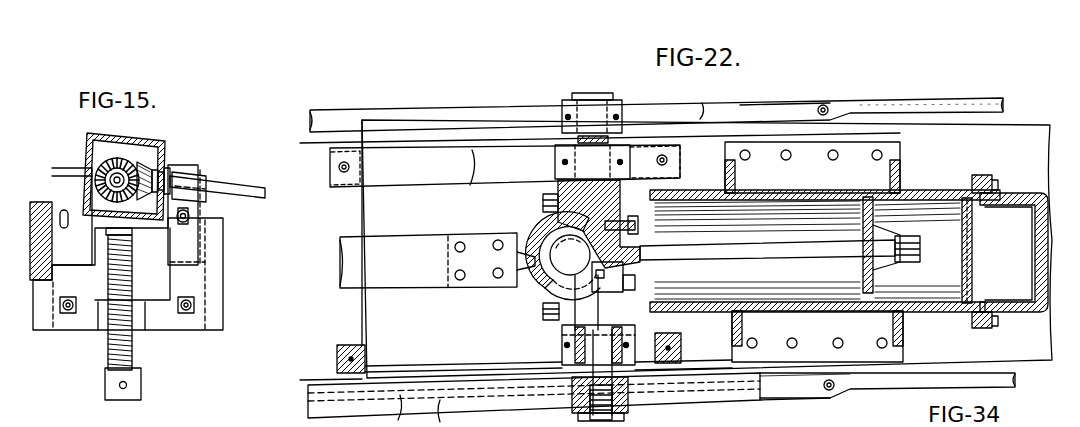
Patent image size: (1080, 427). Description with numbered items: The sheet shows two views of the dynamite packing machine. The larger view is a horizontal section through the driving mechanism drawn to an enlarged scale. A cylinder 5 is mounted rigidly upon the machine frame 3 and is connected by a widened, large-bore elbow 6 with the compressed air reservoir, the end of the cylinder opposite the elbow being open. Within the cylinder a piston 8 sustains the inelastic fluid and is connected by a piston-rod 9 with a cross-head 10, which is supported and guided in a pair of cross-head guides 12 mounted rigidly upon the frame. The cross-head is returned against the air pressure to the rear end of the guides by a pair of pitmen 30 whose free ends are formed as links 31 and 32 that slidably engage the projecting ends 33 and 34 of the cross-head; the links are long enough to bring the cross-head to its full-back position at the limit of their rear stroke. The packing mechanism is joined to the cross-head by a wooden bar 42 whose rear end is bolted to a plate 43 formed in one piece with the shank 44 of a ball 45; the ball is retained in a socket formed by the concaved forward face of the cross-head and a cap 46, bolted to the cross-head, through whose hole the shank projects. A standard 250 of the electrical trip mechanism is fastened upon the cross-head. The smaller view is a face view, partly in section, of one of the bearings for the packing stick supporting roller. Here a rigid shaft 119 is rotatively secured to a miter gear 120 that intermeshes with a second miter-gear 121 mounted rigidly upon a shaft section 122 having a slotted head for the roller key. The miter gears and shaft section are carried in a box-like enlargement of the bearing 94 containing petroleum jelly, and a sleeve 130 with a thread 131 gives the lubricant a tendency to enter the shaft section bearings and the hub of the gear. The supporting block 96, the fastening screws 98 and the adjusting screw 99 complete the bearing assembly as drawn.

In FIG. 15, the rigid shaft 119 is at (252, 190).
In FIG. 15, the miter gear 120 is at (140, 176).
In FIG. 15, the second miter gear 121 is at (105, 168).
In FIG. 15, the shaft section 122 is at (95, 178).
In FIG. 15, the sleeve 130 is at (150, 240).
In FIG. 15, the thread 131 is at (165, 172).
In FIG. 15, the bearing 94 is at (170, 233).
In FIG. 15, the base block 96 is at (170, 318).
In FIG. 15, the fastening screws 98 is at (58, 222).
In FIG. 15, the adjusting screw 99 is at (132, 350).
In FIG. 22, the machine frame 3 is at (676, 249).
In FIG. 22, the cylinder 5 is at (822, 305).
In FIG. 22, the elbow 6 is at (1020, 210).
In FIG. 22, the piston 8 is at (945, 290).
In FIG. 22, the piston rod 9 is at (765, 250).
In FIG. 22, the cross-head 10 is at (590, 313).
In FIG. 22, the cross-head guides 12 is at (412, 165).
In FIG. 22, the pitman 30 is at (915, 100).
In FIG. 22, the link 31 is at (776, 107).
In FIG. 22, the link 32 is at (670, 120).
In FIG. 22, the projecting end of cross-head 33 is at (588, 145).
In FIG. 22, the projecting end of cross-head 34 is at (580, 380).
In FIG. 22, the wooden bar 42 is at (358, 283).
In FIG. 22, the plate 43 is at (522, 290).
In FIG. 22, the shank 44 is at (540, 250).
In FIG. 22, the ball 45 is at (560, 275).
In FIG. 22, the cap 46 is at (546, 212).
In FIG. 22, the standard 250 is at (610, 292).